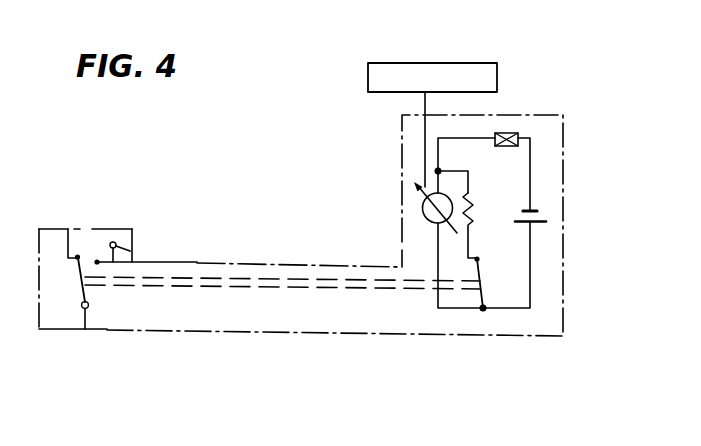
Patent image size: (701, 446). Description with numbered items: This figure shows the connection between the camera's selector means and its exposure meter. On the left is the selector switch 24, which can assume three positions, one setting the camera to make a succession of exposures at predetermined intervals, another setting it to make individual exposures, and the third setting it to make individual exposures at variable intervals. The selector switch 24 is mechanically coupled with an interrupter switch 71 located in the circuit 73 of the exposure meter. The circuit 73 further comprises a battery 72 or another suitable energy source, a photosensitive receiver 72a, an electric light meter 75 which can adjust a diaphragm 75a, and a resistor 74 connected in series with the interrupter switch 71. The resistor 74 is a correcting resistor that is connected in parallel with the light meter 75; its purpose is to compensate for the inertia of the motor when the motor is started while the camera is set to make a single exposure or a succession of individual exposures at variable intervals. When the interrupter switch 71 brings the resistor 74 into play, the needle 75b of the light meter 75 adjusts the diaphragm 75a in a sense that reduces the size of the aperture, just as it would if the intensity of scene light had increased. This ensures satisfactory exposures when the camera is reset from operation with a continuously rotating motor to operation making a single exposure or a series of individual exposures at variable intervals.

The selector switch 24 is at (88, 297).
The interrupter switch 71 is at (504, 265).
The battery 72 is at (538, 216).
The photosensitive receiver 72a is at (511, 132).
The circuit 73 is at (530, 250).
The resistor 74 is at (474, 204).
The electric light meter 75 is at (420, 204).
The diaphragm 75a is at (497, 71).
The needle 75b is at (450, 232).